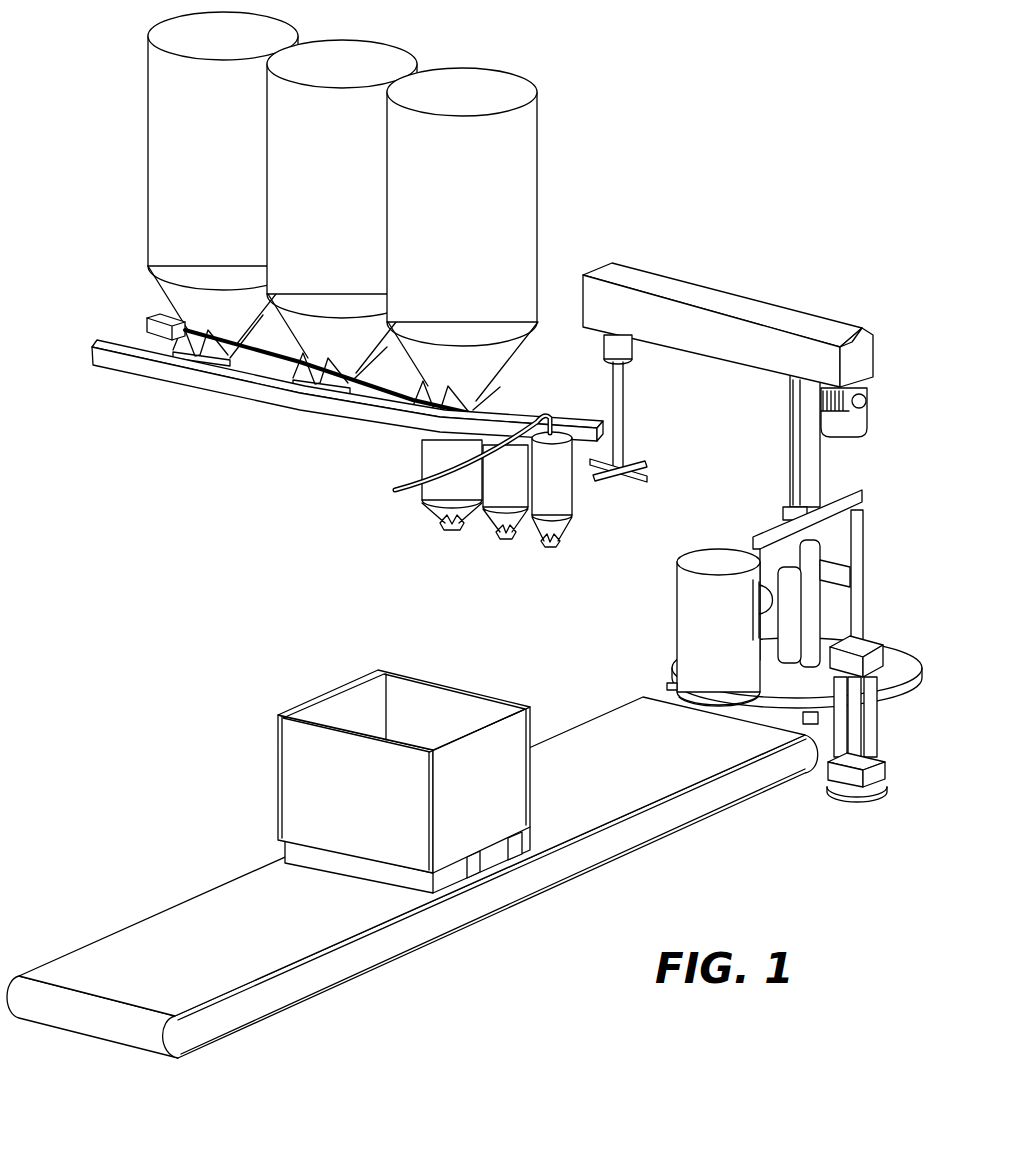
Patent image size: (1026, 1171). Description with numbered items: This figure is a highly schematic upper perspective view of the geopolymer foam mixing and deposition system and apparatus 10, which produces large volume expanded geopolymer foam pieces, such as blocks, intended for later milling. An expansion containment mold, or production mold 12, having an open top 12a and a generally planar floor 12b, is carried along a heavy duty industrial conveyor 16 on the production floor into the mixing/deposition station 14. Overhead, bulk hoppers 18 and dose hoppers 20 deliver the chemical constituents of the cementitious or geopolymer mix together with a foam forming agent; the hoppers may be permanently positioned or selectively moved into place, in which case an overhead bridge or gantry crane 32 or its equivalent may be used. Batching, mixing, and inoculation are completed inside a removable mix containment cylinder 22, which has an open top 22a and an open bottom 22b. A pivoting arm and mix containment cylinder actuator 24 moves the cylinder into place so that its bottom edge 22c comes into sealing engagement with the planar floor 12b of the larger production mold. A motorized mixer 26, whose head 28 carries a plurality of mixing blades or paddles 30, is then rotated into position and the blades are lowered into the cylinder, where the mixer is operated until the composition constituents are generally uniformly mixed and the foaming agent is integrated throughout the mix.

The system and apparatus 10 is at (469, 535).
The expansion containment mold 12 is at (393, 802).
The open top 12a is at (360, 706).
The planar floor 12b is at (496, 847).
The mixing/deposition station 14 is at (900, 613).
The industrial conveyor 16 is at (178, 921).
The bulk hoppers 18 is at (435, 173).
The dose hoppers 20 is at (450, 537).
The mix containment cylinder 22 is at (705, 674).
The open top 22a is at (727, 557).
The open bottom 22b is at (713, 707).
The bottom edge 22c is at (672, 687).
The mix containment cylinder actuator 24 is at (882, 730).
The motorized mixer 26 is at (760, 297).
The head 28 is at (632, 460).
The mixing blades 30 is at (632, 480).
The overhead bridge or gantry crane 32 is at (210, 400).